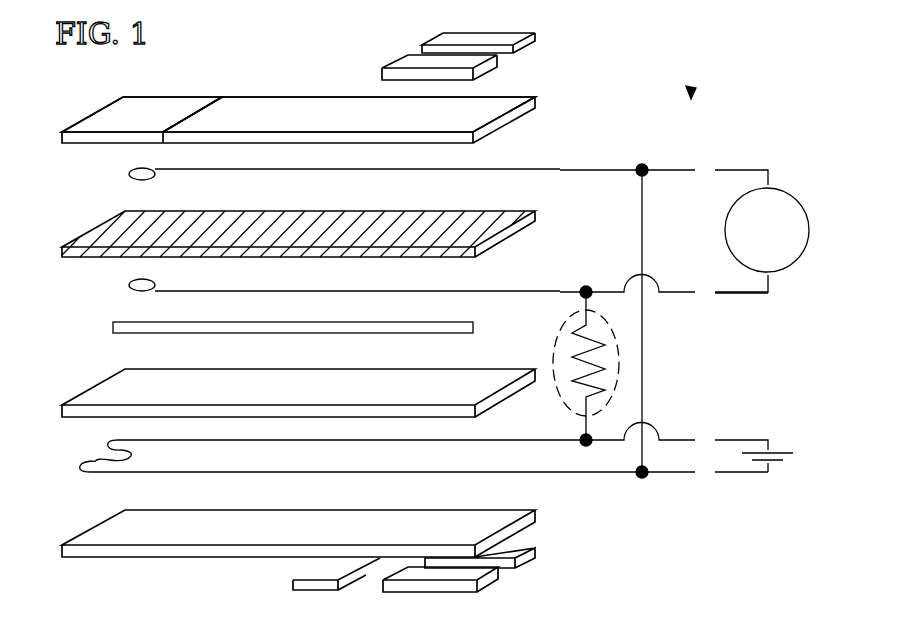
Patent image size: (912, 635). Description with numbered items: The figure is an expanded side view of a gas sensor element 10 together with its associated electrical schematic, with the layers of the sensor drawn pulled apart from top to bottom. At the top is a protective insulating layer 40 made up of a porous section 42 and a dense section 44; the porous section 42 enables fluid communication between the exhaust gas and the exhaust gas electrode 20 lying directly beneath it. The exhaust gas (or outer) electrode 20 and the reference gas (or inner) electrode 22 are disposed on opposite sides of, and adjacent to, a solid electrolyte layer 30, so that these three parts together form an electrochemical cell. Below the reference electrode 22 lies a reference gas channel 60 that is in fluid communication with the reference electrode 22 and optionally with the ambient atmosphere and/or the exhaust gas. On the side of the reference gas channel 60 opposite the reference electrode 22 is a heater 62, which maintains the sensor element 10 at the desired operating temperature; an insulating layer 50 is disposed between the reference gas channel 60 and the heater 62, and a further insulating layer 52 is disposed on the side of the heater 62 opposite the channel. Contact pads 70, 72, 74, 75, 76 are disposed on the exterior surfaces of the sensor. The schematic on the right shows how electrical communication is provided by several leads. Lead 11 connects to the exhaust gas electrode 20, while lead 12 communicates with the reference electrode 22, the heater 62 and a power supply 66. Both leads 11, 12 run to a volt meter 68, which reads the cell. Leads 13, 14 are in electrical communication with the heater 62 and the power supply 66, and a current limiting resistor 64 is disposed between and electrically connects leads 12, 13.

The sensor element 10 is at (691, 95).
The lead 11 is at (577, 169).
The lead 12 is at (615, 290).
The lead 13 is at (605, 441).
The lead 14 is at (608, 474).
The exhaust gas electrode 20 is at (129, 173).
The reference gas electrode 22 is at (129, 285).
The solid electrolyte layer 30 is at (122, 232).
The protective insulating layer 40 is at (100, 110).
The porous section 42 is at (157, 96).
The dense section 44 is at (272, 96).
The insulating layer 50 is at (92, 389).
The insulating layer 52 is at (92, 530).
The reference gas channel 60 is at (113, 326).
The heater 62 is at (96, 455).
The current limiting resistor 64 is at (558, 343).
The power supply 66 is at (786, 452).
The volt meter 68 is at (800, 203).
The contact pad 70 is at (537, 556).
The contact pad 72 is at (487, 581).
The contact pad 74 is at (487, 68).
The contact pad 75 is at (533, 38).
The contact pad 76 is at (352, 583).